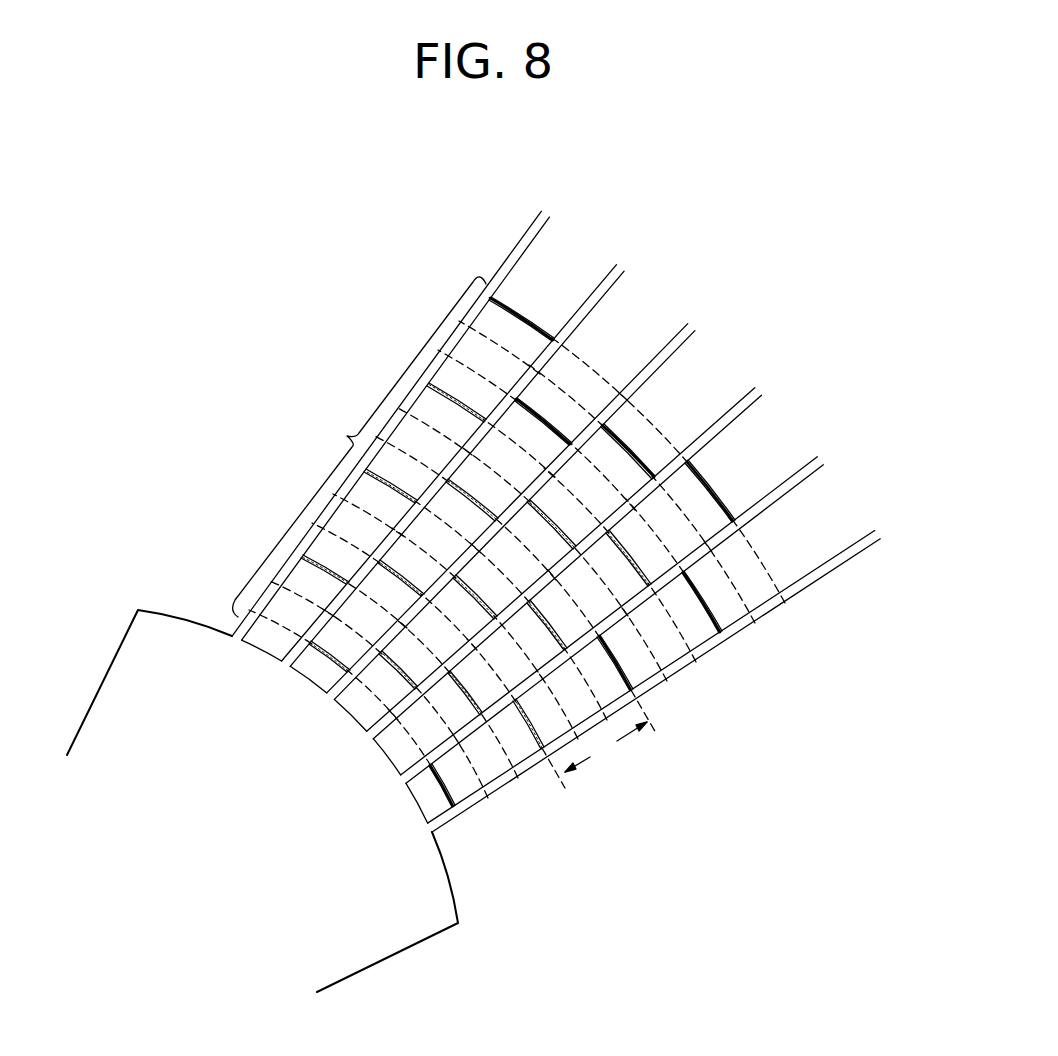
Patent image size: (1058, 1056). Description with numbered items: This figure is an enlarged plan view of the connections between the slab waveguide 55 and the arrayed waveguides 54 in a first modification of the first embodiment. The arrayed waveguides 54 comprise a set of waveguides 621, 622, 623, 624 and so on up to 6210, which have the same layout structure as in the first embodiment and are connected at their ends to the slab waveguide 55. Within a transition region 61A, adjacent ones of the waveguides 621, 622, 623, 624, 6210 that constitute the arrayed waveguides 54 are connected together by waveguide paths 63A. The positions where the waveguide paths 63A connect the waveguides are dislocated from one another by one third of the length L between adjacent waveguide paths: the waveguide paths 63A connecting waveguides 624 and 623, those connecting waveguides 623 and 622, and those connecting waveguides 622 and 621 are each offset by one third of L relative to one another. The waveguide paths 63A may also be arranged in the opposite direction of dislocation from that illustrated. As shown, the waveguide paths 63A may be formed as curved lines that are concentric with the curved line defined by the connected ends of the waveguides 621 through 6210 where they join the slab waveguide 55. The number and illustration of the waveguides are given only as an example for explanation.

The arrayed waveguides 54 is at (567, 193).
The slab waveguide 55 is at (128, 623).
The waveguide 621 is at (824, 579).
The waveguide 622 is at (764, 511).
The waveguide 623 is at (712, 439).
The waveguide 624 is at (655, 376).
The waveguide 6210 is at (530, 230).
The transition region 61A is at (349, 437).
The waveguide path 63A is at (457, 787).
The pitch length L is at (599, 739).